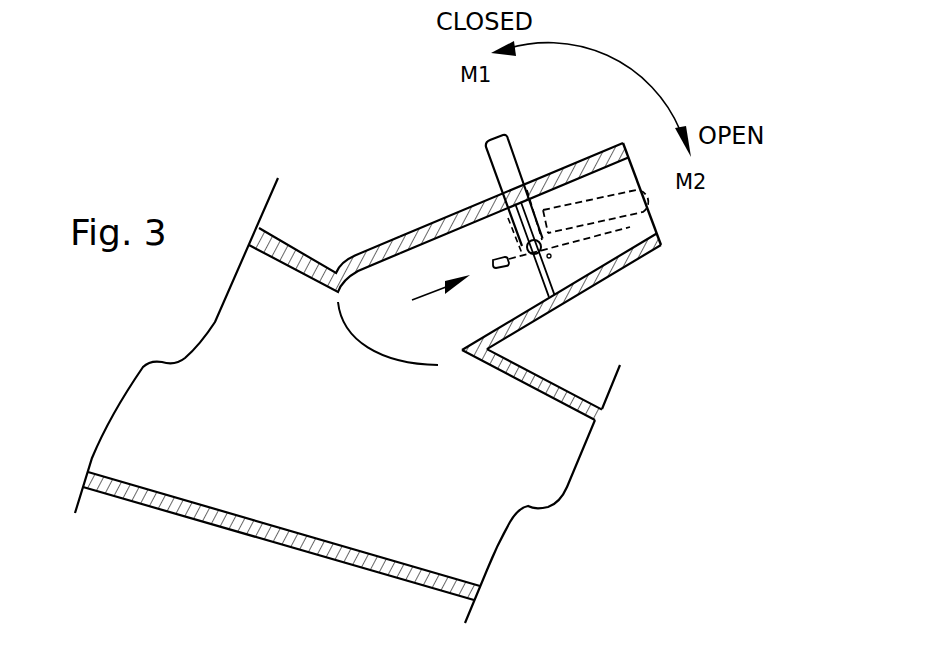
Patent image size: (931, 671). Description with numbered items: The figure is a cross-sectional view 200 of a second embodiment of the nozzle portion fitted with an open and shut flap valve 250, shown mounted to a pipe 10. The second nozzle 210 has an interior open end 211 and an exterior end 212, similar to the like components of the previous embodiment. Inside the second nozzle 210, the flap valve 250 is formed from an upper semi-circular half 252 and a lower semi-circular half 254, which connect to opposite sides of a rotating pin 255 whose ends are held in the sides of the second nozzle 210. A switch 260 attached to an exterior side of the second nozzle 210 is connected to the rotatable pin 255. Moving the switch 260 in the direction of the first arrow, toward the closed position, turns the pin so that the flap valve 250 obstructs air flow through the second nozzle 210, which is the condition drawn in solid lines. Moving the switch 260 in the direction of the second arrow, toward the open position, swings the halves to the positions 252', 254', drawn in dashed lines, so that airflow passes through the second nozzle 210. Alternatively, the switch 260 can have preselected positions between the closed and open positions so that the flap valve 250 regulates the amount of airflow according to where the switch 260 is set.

The pipe 10 is at (185, 518).
The cross-sectional view 200 is at (328, 145).
The second nozzle 210 is at (391, 288).
The interior open end 211 is at (347, 335).
The exterior end 212 is at (662, 238).
The flap valve 250 is at (415, 301).
The upper semi-circular half 252 is at (549, 201).
The upper semi-circular half open position 252' is at (646, 223).
The lower semi-circular half 254 is at (487, 291).
The lower semi-circular half open position 254' is at (505, 218).
The rotating pin 255 is at (553, 257).
The switch 260 is at (490, 154).